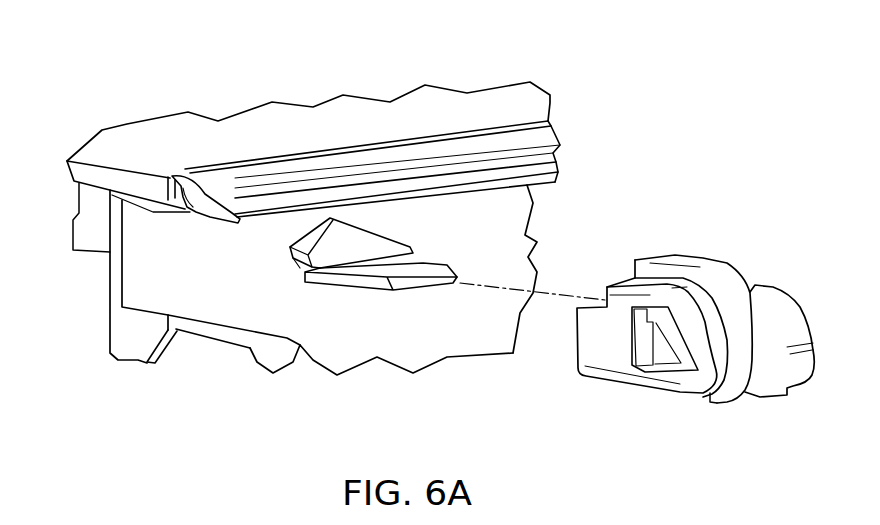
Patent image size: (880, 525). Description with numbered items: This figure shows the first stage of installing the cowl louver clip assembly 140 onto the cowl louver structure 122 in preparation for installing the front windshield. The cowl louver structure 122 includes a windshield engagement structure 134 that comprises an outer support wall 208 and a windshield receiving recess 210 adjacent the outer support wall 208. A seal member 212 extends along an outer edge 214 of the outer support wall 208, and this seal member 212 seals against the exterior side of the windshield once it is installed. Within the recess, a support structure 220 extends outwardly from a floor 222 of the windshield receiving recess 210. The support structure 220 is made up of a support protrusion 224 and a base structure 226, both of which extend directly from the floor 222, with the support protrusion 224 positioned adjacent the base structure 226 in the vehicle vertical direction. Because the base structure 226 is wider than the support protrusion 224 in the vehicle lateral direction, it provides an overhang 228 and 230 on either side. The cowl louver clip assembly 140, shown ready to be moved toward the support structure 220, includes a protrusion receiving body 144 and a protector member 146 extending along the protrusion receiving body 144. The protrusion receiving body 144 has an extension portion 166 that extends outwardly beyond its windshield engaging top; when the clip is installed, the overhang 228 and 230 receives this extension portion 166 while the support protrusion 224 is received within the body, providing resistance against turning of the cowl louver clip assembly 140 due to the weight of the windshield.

The cowl louver structure 122 is at (572, 70).
The outer support wall 208 is at (327, 107).
The seal member 212 is at (560, 162).
The outer edge 214 is at (158, 191).
The windshield receiving recess 210 is at (120, 288).
The support structure 220 is at (262, 313).
The floor 222 is at (527, 266).
The windshield engagement structure 134 is at (578, 199).
The base structure 226 is at (372, 237).
The overhang 228 is at (293, 268).
The support protrusion 224 is at (359, 283).
The overhang 230 is at (417, 262).
The cowl louver clip assembly 140 is at (738, 236).
The extension portion 166 is at (610, 360).
The protrusion receiving body 144 is at (723, 378).
The protector member 146 is at (755, 320).